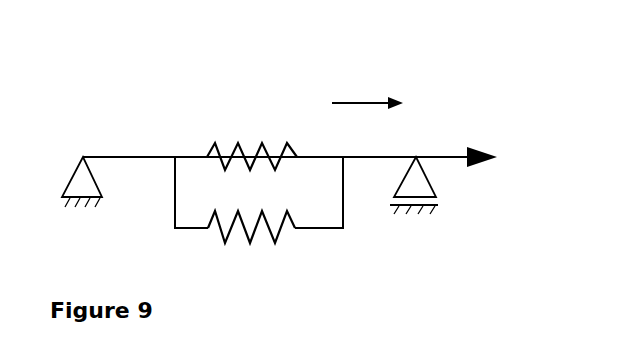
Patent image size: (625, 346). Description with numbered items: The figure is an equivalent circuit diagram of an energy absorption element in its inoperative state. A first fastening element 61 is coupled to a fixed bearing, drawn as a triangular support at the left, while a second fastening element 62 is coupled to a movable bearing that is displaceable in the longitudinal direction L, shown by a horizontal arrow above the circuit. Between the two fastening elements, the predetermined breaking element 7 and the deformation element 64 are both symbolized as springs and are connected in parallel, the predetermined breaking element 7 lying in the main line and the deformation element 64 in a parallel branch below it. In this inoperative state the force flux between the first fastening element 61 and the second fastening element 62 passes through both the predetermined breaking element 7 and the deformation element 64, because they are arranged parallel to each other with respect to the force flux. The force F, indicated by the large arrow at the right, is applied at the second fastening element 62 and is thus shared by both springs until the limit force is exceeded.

The predetermined breaking element 7 is at (252, 152).
The first fastening element 61 is at (101, 152).
The second fastening element 62 is at (393, 155).
The deformation element 64 is at (248, 240).
The longitudinal direction L is at (368, 102).
The force F is at (290, 168).